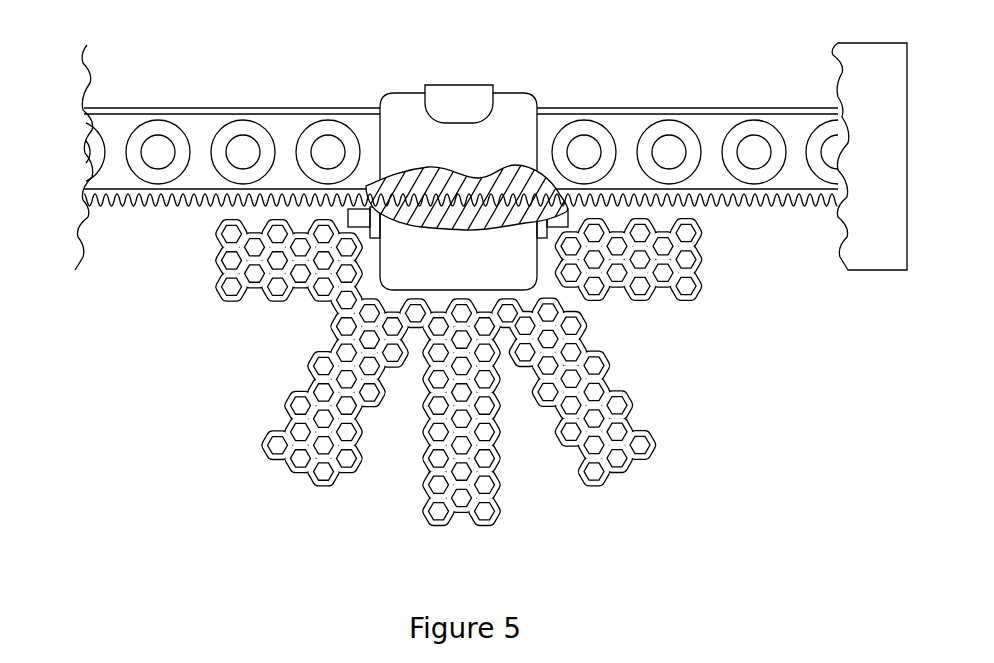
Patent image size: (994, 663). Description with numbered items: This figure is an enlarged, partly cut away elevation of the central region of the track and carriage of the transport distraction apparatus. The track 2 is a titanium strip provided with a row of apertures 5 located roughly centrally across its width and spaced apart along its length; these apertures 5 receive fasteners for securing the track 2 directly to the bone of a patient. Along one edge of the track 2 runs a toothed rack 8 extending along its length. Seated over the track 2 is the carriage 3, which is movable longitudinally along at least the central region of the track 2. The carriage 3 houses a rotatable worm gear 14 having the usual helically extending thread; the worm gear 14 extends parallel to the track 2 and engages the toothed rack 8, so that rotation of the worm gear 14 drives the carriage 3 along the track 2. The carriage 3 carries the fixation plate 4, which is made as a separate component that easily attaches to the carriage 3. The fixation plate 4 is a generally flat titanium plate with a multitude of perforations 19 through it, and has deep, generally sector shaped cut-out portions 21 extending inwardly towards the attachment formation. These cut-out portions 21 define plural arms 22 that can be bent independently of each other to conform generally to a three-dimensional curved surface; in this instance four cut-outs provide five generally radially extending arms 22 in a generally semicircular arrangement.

The track 2 is at (203, 133).
The carriage 3 is at (395, 90).
The fixation plate 4 is at (390, 295).
The apertures 5 is at (757, 150).
The toothed rack 8 is at (133, 207).
The worm gear 14 is at (487, 200).
The perforations 19 is at (345, 428).
The sector shaped cut-out portions 21 is at (297, 323).
The arms 22 is at (657, 435).